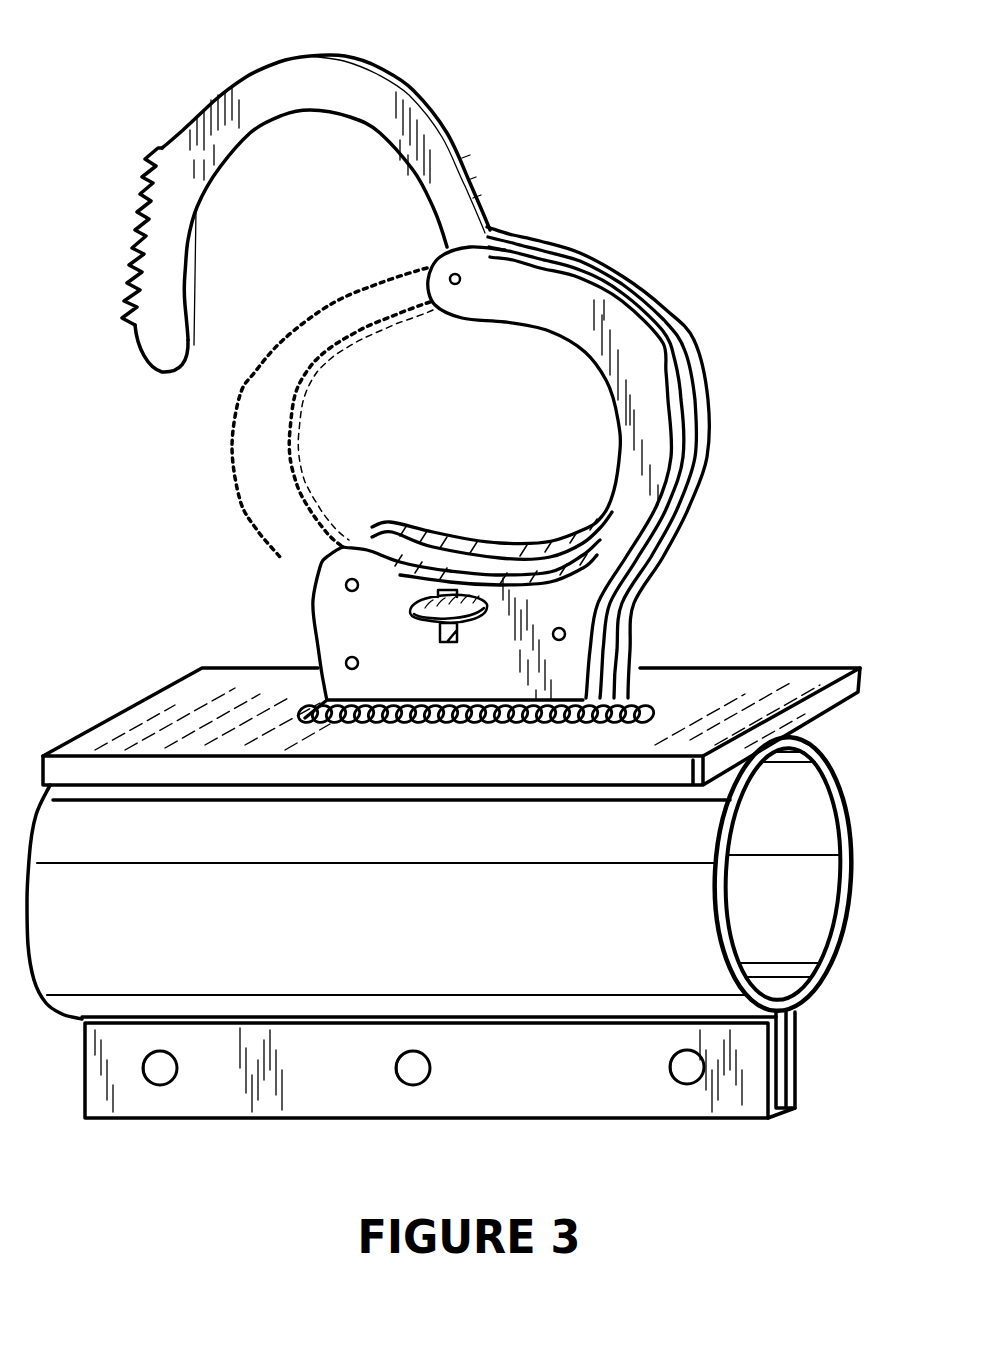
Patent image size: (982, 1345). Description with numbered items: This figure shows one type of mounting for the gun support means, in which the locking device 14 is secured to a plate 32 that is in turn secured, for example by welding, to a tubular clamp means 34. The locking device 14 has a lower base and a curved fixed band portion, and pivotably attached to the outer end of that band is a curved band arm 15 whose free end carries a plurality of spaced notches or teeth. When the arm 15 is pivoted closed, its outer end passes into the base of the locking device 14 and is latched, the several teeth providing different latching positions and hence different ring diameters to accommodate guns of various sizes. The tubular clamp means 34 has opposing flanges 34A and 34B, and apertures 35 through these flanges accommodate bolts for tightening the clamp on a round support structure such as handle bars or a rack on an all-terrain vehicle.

The locking device 14 is at (708, 463).
The curved band arm 15 is at (333, 72).
The plate 32 is at (723, 663).
The tubular clamp means 34 is at (847, 795).
The flange 34A is at (714, 1096).
The flange 34B is at (800, 1043).
The apertures 35 is at (670, 1065).